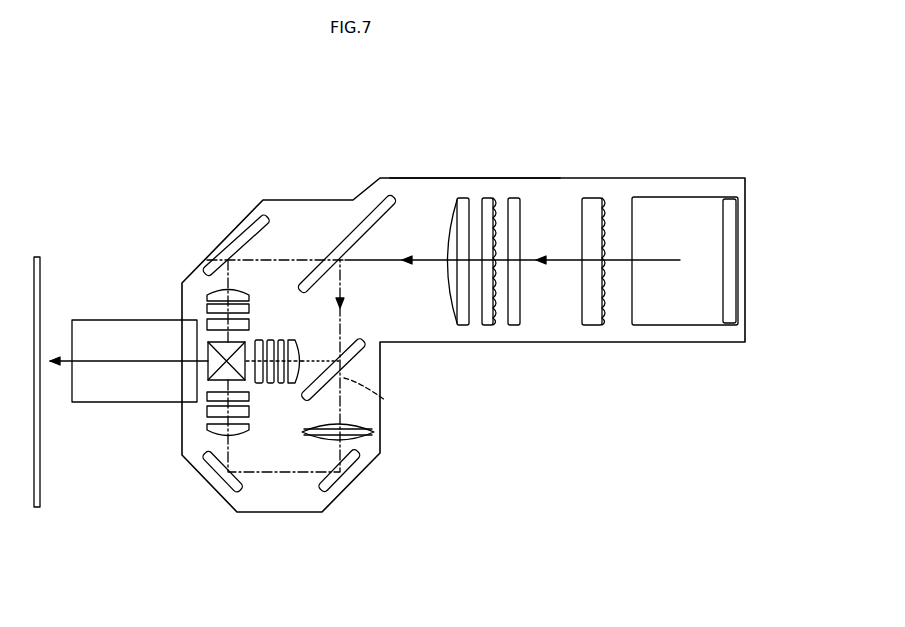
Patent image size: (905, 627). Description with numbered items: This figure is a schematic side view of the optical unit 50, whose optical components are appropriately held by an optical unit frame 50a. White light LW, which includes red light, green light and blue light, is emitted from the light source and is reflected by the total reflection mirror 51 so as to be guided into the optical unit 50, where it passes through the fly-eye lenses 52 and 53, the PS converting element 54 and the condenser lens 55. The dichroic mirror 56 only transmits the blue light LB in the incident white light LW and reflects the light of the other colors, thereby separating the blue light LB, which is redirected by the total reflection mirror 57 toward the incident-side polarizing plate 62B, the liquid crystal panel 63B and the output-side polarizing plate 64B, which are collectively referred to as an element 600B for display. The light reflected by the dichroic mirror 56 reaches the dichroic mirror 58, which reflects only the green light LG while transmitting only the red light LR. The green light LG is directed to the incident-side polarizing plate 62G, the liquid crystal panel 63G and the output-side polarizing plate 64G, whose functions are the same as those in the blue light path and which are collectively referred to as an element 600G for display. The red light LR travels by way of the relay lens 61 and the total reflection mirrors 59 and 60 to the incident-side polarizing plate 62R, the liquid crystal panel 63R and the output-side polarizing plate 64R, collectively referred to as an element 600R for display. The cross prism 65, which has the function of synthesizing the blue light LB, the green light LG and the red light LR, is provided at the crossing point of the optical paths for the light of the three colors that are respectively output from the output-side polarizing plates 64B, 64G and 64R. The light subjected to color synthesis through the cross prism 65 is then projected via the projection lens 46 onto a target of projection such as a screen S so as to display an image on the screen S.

The projection lens 46 is at (88, 398).
The optical unit 50 is at (330, 166).
The optical unit frame 50a is at (438, 178).
The total reflection mirror 51 is at (688, 208).
The fly-eye lens 52 is at (597, 324).
The fly-eye lens 53 is at (491, 324).
The PS converting element 54 is at (512, 198).
The condenser lens 55 is at (459, 324).
The dichroic mirror 56 is at (393, 198).
The total reflection mirror 57 is at (253, 226).
The dichroic mirror 58 is at (365, 352).
The total reflection mirror 59 is at (370, 462).
The total reflection mirror 60 is at (223, 489).
The relay lens 61 is at (374, 432).
The cross prism 65 is at (208, 354).
The element for display 600B is at (155, 292).
The incident-side polarizing plate 62B is at (207, 293).
The liquid crystal panel 63B is at (207, 308).
The output-side polarizing plate 64B is at (207, 324).
The element for display 600R is at (154, 434).
The incident-side polarizing plate 62R is at (207, 428).
The liquid crystal panel 63R is at (207, 412).
The output-side polarizing plate 64R is at (207, 398).
The element for display 600G is at (290, 465).
The incident-side polarizing plate 62G is at (282, 384).
The liquid crystal panel 63G is at (271, 384).
The output-side polarizing plate 64G is at (259, 384).
The screen S is at (40, 496).
The white light LW is at (612, 262).
The blue light LB is at (308, 260).
The green light LG is at (330, 352).
The red light LR is at (388, 400).